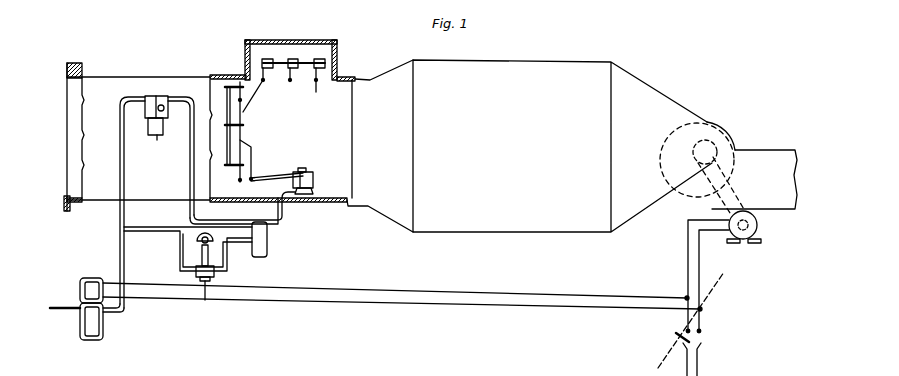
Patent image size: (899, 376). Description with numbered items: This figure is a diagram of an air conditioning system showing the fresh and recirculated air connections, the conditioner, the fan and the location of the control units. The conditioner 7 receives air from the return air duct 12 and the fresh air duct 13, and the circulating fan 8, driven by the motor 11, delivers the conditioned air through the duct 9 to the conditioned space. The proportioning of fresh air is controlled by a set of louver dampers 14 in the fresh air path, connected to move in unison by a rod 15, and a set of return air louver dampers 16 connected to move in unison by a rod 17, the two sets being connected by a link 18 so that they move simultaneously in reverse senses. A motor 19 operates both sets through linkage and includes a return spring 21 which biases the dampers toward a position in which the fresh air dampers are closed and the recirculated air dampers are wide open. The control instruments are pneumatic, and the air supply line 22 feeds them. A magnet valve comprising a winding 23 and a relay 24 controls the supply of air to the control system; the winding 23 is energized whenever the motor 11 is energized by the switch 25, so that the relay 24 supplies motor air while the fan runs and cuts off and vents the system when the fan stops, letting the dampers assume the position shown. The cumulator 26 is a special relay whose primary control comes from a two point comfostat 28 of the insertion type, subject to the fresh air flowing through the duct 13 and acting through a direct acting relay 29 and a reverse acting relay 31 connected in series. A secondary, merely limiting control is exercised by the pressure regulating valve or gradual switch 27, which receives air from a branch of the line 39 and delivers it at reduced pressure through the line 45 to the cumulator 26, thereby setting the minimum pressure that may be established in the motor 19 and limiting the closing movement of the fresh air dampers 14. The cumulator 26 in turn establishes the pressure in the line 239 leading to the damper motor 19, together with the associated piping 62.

The conditioner 7 is at (562, 146).
The circulating fan 8 is at (718, 122).
The duct leading to the conditioned space 9 is at (766, 158).
The motor driving the fan 11 is at (758, 226).
The return air duct 12 is at (337, 55).
The fresh air duct 13 is at (73, 168).
The louver dampers 14 is at (243, 135).
The rod 15 is at (226, 156).
The return air louver dampers 16 is at (290, 80).
The rod 17 is at (280, 62).
The link 18 is at (255, 95).
The motor 19 is at (296, 174).
The return spring 21 is at (315, 179).
The air supply line 22 is at (371, 297).
The winding 23 is at (89, 282).
The relay 24 is at (90, 325).
The switch 25 is at (700, 345).
The cumulator 26 is at (263, 254).
The pressure regulating valve 27 is at (205, 292).
The two point comfostat 28 is at (157, 140).
The direct acting relay 29 is at (150, 97).
The reverse acting relay 31 is at (168, 98).
The line 39 is at (121, 177).
The line 45 is at (226, 257).
The pipe 62 is at (190, 168).
The line 239 is at (286, 222).